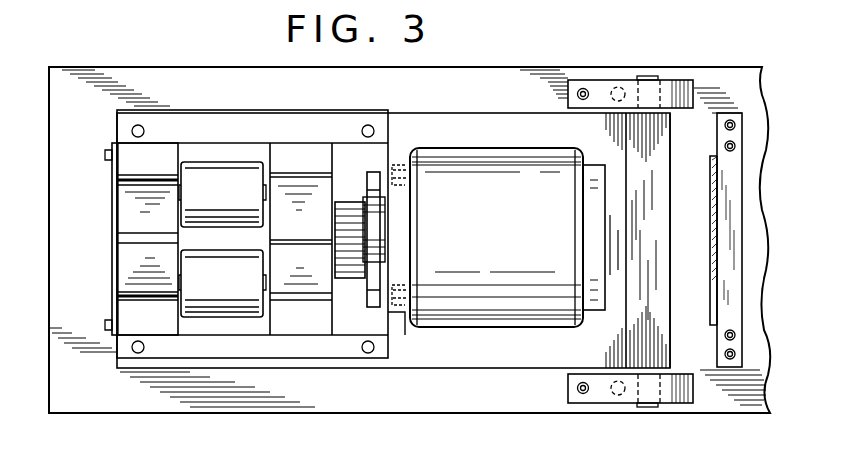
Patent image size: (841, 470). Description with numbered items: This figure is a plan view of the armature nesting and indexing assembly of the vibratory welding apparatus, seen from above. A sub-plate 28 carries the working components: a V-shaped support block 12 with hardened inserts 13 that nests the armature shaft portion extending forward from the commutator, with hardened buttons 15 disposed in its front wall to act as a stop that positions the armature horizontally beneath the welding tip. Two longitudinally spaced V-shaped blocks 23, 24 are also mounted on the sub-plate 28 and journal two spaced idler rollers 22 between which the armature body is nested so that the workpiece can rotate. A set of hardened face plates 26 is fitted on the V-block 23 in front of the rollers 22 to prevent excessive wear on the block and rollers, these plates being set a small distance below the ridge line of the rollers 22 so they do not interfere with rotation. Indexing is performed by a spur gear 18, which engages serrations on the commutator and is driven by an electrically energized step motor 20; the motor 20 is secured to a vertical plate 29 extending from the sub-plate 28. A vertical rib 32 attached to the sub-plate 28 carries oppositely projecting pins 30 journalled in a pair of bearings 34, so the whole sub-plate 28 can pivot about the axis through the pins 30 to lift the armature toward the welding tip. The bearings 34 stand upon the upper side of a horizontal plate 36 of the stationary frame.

The V-shaped support block 12 is at (378, 211).
The hardened inserts 13 is at (390, 262).
The hardened buttons 15 is at (365, 205).
The spur gear 18 is at (348, 228).
The step motor 20 is at (506, 249).
The idler rollers 22 is at (230, 199).
The V-shaped block 23 is at (125, 218).
The V-shaped block 24 is at (303, 188).
The hardened face plates 26 is at (128, 266).
The sub-plate 28 is at (495, 359).
The vertical plate 29 is at (396, 319).
The pins 30 is at (646, 77).
The vertical rib 32 is at (652, 224).
The bearings 34 is at (614, 82).
The horizontal plate 36 is at (348, 399).